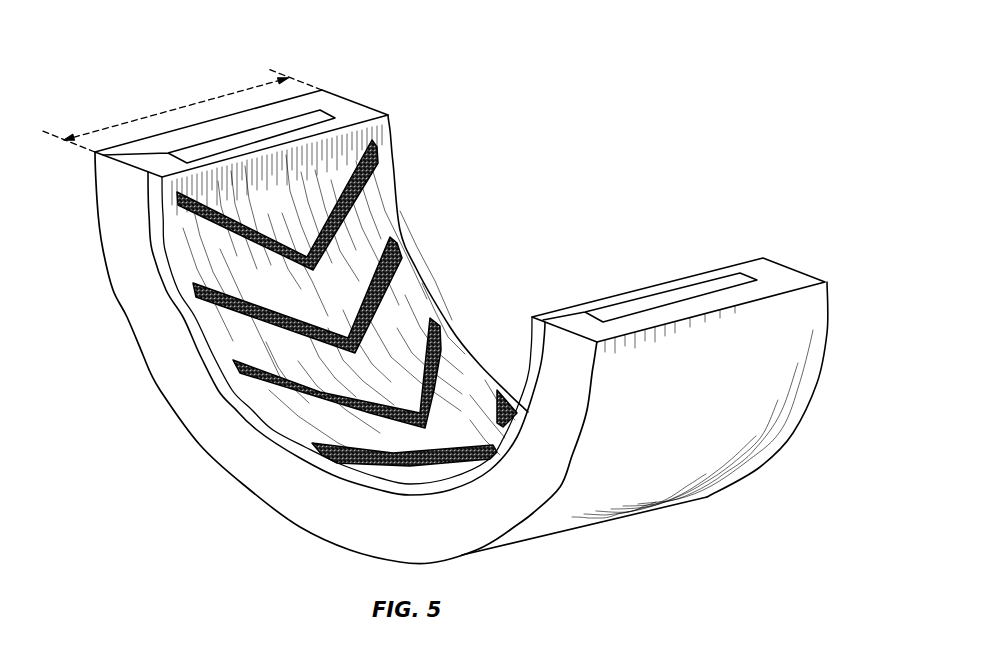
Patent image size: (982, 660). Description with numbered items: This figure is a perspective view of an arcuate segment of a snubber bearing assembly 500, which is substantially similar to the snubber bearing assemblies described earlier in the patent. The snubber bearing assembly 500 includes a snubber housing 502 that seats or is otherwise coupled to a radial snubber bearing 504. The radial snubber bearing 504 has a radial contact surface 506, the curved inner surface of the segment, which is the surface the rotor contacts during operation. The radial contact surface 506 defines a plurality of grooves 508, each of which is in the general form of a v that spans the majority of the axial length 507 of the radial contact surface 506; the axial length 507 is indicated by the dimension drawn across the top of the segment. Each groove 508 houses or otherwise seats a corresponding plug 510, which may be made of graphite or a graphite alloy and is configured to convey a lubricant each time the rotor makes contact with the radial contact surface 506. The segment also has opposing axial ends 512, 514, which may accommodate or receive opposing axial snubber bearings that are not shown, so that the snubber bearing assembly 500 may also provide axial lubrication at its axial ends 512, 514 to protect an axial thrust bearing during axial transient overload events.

The snubber bearing assembly 500 is at (622, 145).
The snubber housing 502 is at (781, 270).
The radial snubber bearing 504 is at (289, 133).
The radial contact surface 506 is at (388, 192).
The axial length 507 is at (177, 107).
The groove 508 is at (380, 151).
The plug 510 is at (288, 390).
The axial end 512 is at (163, 350).
The axial end 514 is at (803, 272).